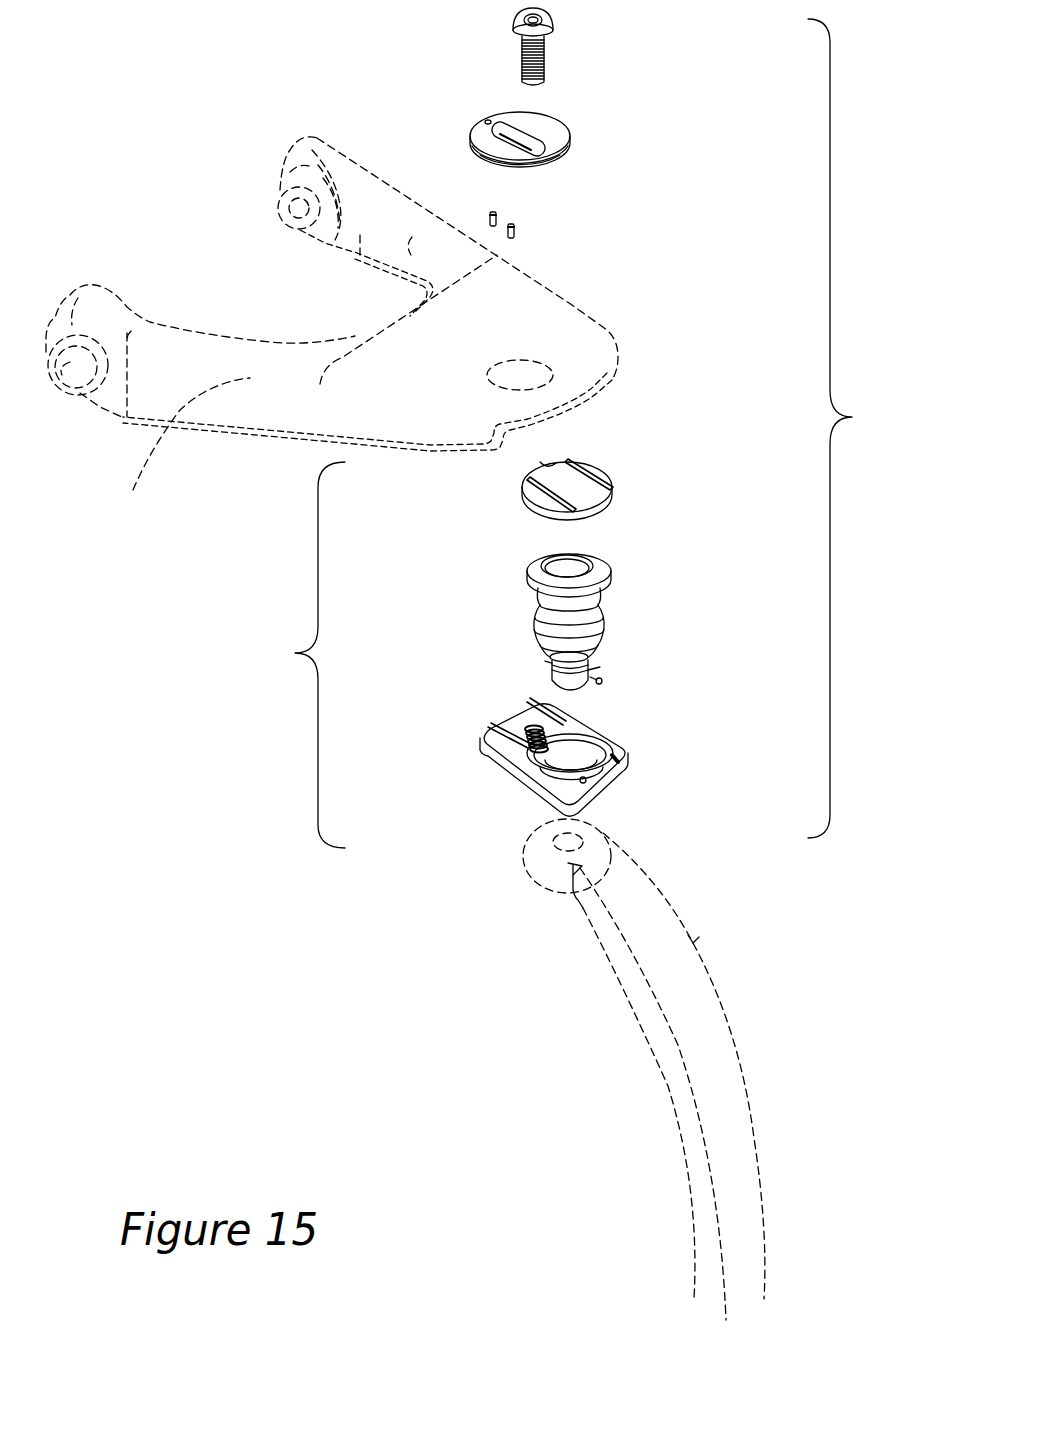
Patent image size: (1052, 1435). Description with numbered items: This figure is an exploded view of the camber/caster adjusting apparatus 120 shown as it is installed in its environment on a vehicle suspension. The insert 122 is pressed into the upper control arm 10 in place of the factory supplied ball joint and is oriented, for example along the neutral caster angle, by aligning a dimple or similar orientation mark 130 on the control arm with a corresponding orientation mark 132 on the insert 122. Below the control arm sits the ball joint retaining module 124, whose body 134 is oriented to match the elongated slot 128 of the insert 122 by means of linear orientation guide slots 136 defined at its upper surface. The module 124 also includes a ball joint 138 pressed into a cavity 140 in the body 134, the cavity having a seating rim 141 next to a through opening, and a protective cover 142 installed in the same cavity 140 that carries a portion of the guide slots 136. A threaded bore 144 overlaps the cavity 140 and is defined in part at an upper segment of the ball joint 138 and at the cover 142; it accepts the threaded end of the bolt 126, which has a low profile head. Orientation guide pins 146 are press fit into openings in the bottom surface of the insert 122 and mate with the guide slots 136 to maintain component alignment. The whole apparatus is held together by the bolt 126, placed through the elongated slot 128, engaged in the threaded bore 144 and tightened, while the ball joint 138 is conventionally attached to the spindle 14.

The upper control arm 10 is at (332, 327).
The spindle 14 is at (693, 943).
The adjusting apparatus 120 is at (848, 398).
The insert 122 is at (585, 118).
The ball joint retaining module 124 is at (290, 673).
The bolt 126 is at (547, 60).
The elongated slot 128 is at (566, 133).
The orientation mark 130 is at (478, 342).
The orientation mark 132 is at (558, 481).
The body 134 is at (585, 763).
The linear orientation guide slots 136 is at (476, 127).
The ball joint 138 is at (607, 623).
The cavity 140 is at (580, 781).
The seating rim 141 is at (590, 730).
The protective cover 142 is at (663, 464).
The threaded bore 144 is at (527, 748).
The orientation guide pins 146 is at (497, 213).